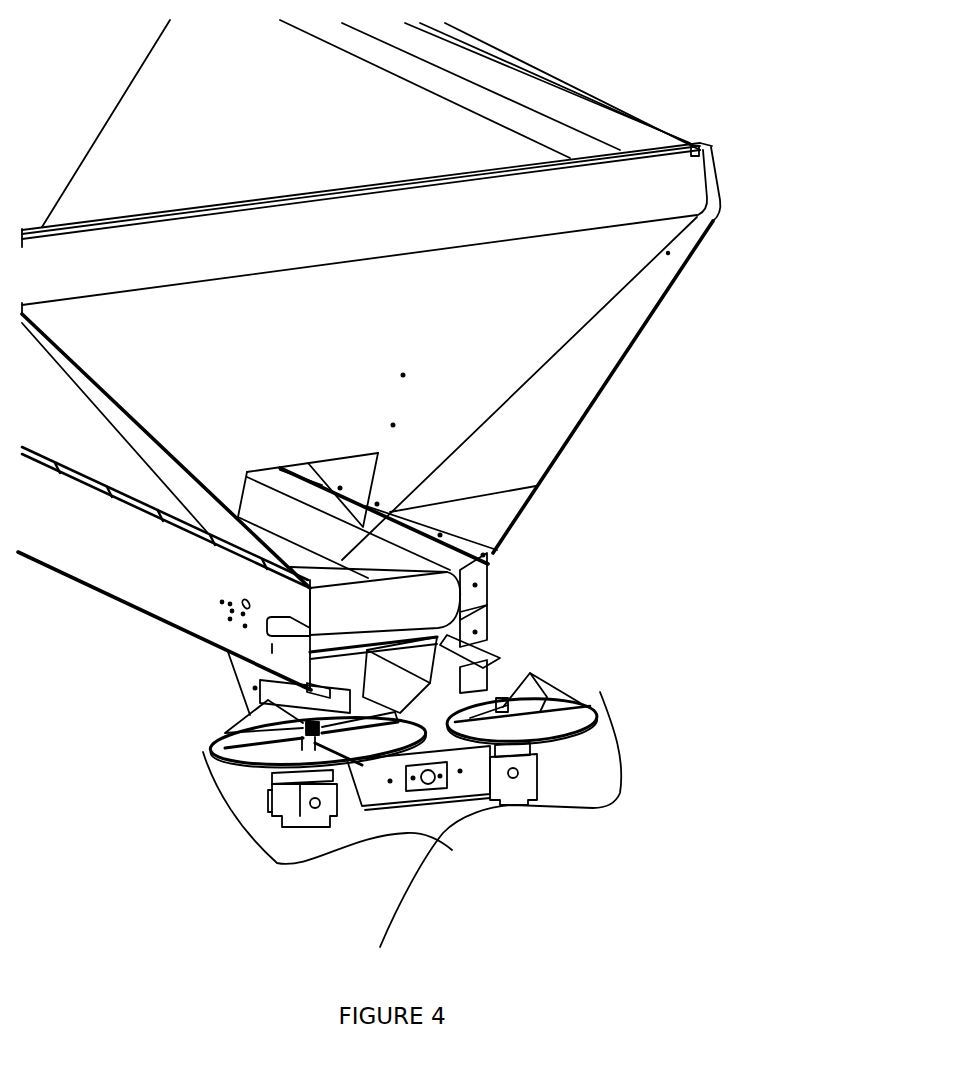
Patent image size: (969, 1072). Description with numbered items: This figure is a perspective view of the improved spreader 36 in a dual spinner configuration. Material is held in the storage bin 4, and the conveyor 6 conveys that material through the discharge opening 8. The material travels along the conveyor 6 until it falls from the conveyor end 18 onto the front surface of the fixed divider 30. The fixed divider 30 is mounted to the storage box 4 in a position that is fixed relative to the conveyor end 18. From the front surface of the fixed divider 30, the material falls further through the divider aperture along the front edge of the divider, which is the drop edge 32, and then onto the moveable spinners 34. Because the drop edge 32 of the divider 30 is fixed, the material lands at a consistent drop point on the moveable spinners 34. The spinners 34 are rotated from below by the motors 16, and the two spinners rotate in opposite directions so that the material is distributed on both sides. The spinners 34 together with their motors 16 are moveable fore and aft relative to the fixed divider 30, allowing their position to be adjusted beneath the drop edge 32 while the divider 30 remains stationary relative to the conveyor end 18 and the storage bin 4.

The storage bin 4 is at (347, 167).
The conveyor 6 is at (343, 560).
The discharge opening 8 is at (308, 463).
The motors 16 is at (303, 827).
The conveyor end 18 is at (383, 610).
The fixed divider 30 is at (430, 658).
The drop edge 32 is at (485, 762).
The moveable spinners 34 is at (298, 758).
The improved spreader 36 is at (410, 890).